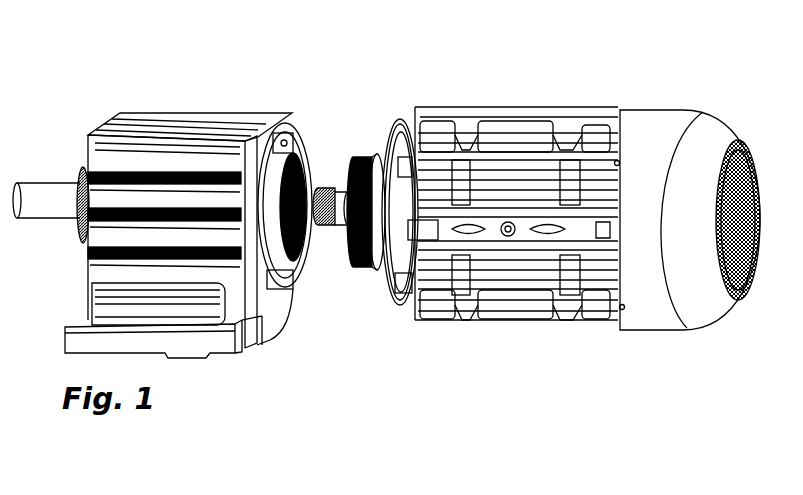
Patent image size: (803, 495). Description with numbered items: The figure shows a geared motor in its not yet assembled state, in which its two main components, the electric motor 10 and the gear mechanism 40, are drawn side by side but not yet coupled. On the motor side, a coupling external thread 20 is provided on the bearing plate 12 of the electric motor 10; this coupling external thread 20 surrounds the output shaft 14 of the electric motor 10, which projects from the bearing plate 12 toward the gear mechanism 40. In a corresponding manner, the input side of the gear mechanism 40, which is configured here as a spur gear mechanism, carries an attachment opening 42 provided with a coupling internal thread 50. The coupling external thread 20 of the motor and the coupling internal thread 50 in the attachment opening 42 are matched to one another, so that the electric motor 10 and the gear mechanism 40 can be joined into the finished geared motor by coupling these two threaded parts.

The electric motor 10 is at (502, 102).
The bearing plate 12 is at (388, 282).
The output shaft 14 is at (328, 225).
The coupling external thread 20 is at (361, 267).
The gear mechanism 40 is at (188, 102).
The attachment opening 42 is at (315, 225).
The coupling internal thread 50 is at (299, 262).